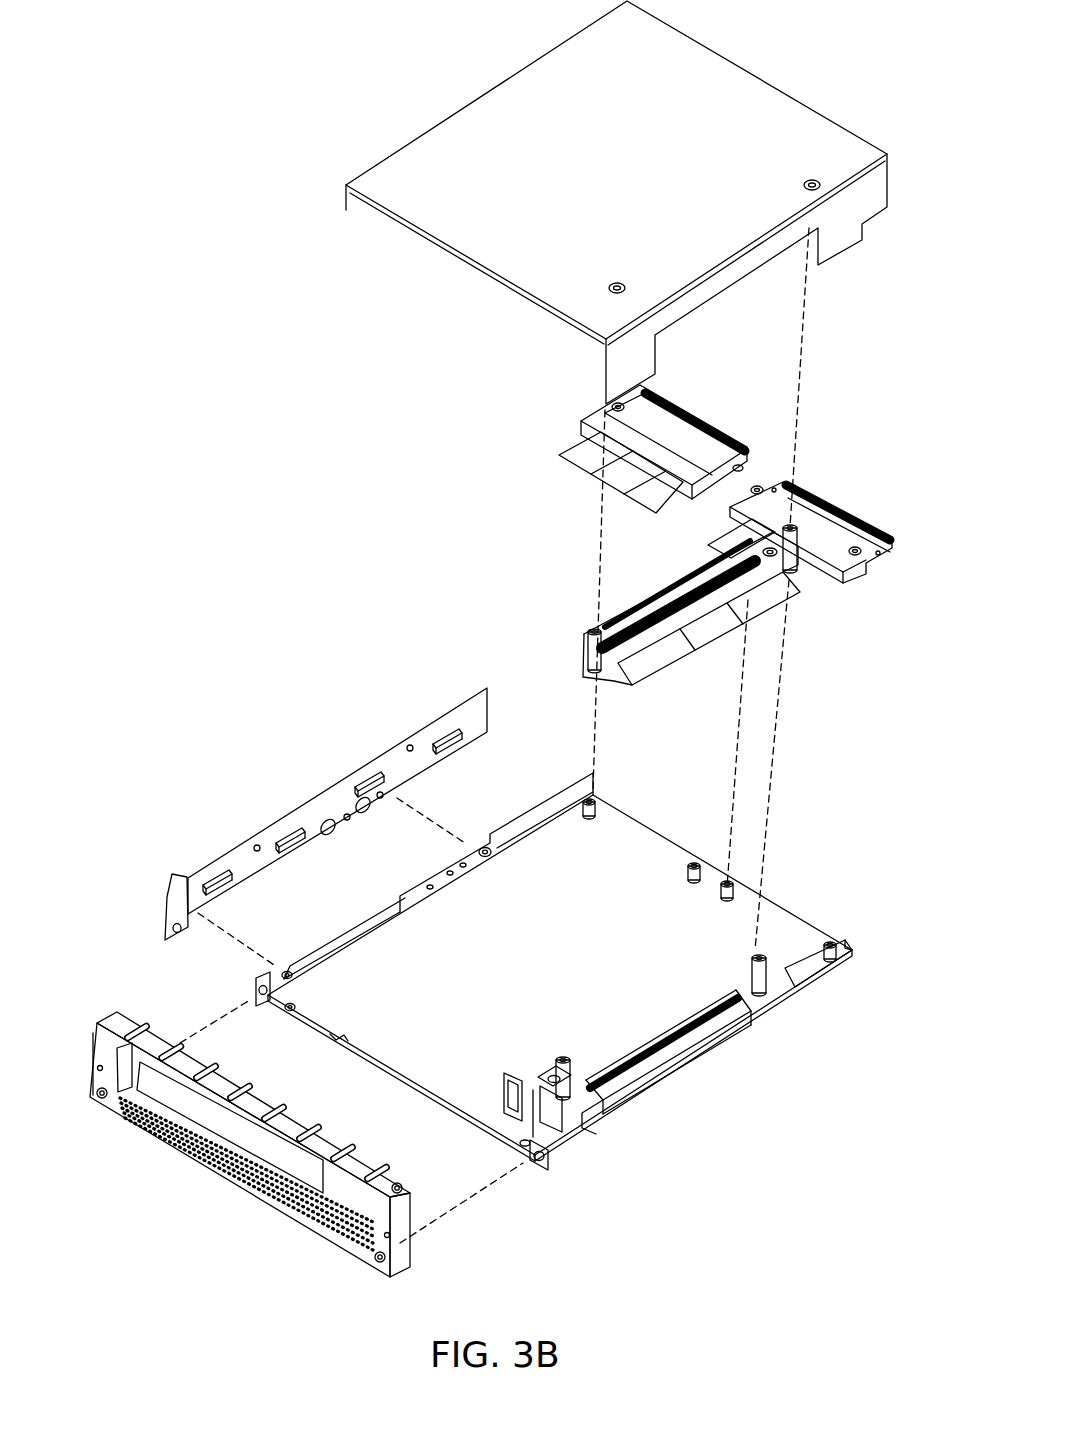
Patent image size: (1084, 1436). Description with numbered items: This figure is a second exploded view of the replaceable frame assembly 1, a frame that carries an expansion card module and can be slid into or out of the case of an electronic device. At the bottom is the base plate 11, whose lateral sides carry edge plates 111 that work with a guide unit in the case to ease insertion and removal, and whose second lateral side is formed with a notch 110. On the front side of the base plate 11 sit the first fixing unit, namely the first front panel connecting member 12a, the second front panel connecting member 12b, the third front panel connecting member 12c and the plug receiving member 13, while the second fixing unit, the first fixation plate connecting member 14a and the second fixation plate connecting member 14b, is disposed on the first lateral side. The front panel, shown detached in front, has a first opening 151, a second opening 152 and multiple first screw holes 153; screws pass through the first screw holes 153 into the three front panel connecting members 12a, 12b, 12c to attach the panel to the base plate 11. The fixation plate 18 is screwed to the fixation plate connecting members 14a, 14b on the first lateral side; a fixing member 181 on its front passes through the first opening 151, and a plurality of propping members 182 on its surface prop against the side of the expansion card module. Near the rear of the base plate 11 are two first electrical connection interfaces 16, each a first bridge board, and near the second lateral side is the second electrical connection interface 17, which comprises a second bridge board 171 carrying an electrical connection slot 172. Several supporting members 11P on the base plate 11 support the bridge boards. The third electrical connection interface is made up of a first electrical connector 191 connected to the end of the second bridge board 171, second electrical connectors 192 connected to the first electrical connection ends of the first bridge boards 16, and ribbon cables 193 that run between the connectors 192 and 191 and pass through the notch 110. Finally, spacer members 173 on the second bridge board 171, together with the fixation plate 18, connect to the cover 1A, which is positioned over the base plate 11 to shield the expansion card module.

The replaceable frame assembly 1 is at (174, 396).
The cover 1A is at (462, 256).
The base plate 11 is at (529, 978).
The supporting member 11P is at (598, 810).
The notch 110 is at (608, 1089).
The edge plate 111 is at (560, 795).
The first front panel connecting member 12a is at (552, 1164).
The second front panel connecting member 12b is at (256, 990).
The third front panel connecting member 12c is at (575, 1099).
The plug receiving member 13 is at (512, 1074).
The first fixation plate connecting member 14a is at (422, 897).
The second fixation plate connecting member 14b is at (287, 968).
The first opening 151 is at (120, 1060).
The second opening 152 is at (254, 1134).
The first screw hole 153 is at (102, 1098).
The first electrical connection interface 16 is at (603, 404).
The second electrical connection interface 17 is at (629, 639).
The second bridge board 171 is at (580, 656).
The electrical connection slot 172 is at (676, 580).
The spacer member 173 is at (584, 632).
The fixation plate 18 is at (287, 815).
The fixing member 181 is at (164, 928).
The propping member 182 is at (460, 733).
The first electrical connector 191 is at (799, 576).
The second electrical connector 192 is at (582, 420).
The ribbon cable 193 is at (577, 466).